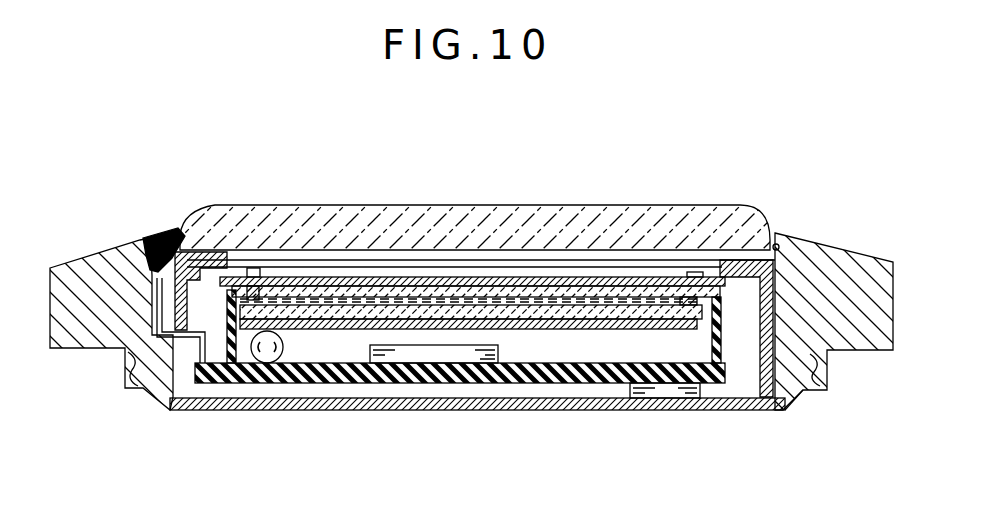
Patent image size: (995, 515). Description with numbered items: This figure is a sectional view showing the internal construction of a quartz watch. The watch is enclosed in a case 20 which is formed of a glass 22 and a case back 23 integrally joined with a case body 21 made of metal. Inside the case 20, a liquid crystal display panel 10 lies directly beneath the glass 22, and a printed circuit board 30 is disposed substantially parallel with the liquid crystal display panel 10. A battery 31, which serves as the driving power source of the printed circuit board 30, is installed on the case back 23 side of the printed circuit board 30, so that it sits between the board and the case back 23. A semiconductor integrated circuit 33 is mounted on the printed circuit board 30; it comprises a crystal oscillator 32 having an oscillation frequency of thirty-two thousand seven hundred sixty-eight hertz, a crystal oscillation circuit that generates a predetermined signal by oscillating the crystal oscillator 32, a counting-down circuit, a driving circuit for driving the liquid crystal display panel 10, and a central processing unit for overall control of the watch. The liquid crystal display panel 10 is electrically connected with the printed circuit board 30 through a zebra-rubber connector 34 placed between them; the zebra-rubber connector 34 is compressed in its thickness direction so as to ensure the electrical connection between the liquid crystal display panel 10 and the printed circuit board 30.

The liquid crystal display panel 10 is at (395, 277).
The case 20 is at (472, 261).
The case body 21 is at (842, 260).
The glass 22 is at (652, 208).
The case back 23 is at (795, 404).
The printed circuit board 30 is at (553, 383).
The battery 31 is at (668, 390).
The crystal oscillator 32 is at (270, 363).
The semiconductor integrated circuit 33 is at (436, 358).
The zebra-rubber connector 34 is at (229, 335).